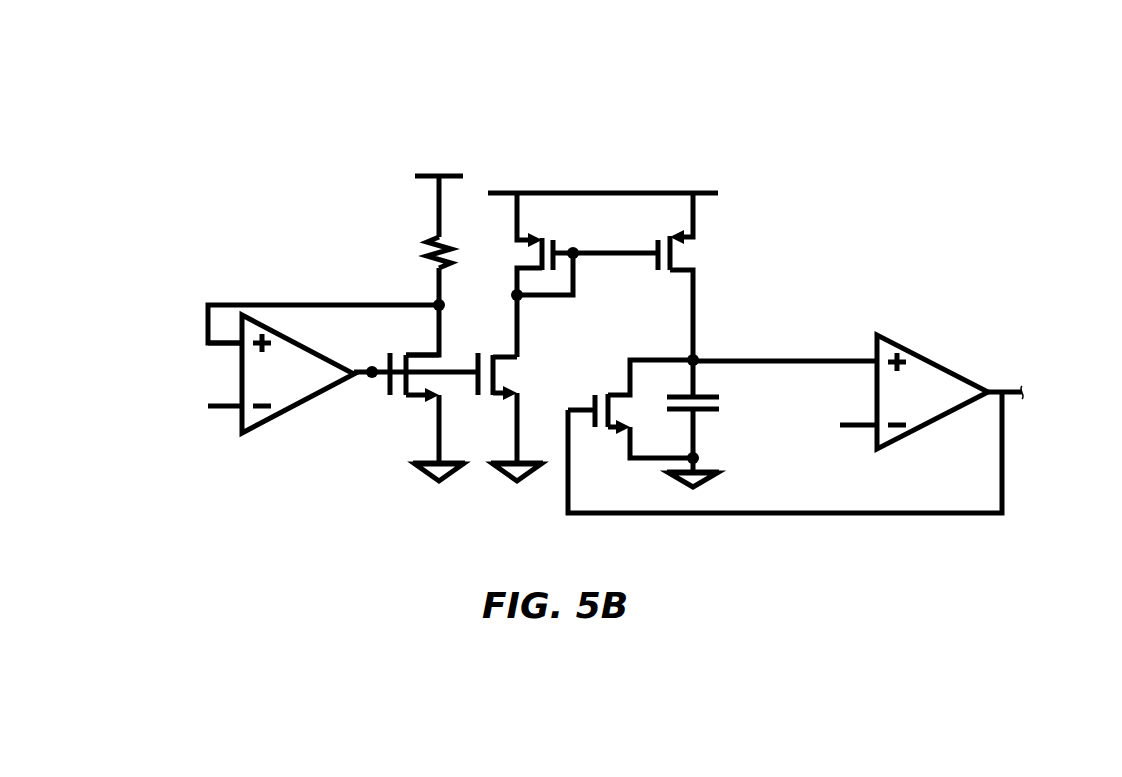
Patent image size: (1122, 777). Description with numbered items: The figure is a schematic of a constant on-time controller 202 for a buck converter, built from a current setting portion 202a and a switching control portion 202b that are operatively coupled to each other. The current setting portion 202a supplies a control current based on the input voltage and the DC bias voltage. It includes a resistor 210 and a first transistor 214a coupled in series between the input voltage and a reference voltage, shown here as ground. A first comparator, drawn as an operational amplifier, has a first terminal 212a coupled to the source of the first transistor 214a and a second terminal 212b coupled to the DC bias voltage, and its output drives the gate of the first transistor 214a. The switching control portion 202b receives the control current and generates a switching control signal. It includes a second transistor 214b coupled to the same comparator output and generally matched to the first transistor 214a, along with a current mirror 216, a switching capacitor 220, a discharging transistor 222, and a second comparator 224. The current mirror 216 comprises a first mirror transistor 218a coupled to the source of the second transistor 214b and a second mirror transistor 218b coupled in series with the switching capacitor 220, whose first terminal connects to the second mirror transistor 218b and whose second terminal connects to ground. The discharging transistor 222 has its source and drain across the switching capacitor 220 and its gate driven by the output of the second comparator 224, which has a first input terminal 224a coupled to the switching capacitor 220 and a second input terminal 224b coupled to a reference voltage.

The constant T_on controller 202 is at (918, 120).
The current setting portion 202a is at (400, 103).
The switching control portion 202b is at (733, 105).
The resistor 210 is at (432, 240).
The first terminal 212a is at (217, 347).
The second terminal 212b is at (212, 412).
The first transistor 214a is at (397, 396).
The second transistor 214b is at (519, 356).
The current mirror 216 is at (724, 240).
The first mirror transistor 218a is at (541, 240).
The second mirror transistor 218b is at (690, 258).
The switching capacitor 220 is at (708, 411).
The discharging transistor 222 is at (606, 428).
The second comparator 224 is at (927, 358).
The first input terminal 224a is at (807, 362).
The second input terminal 224b is at (848, 427).